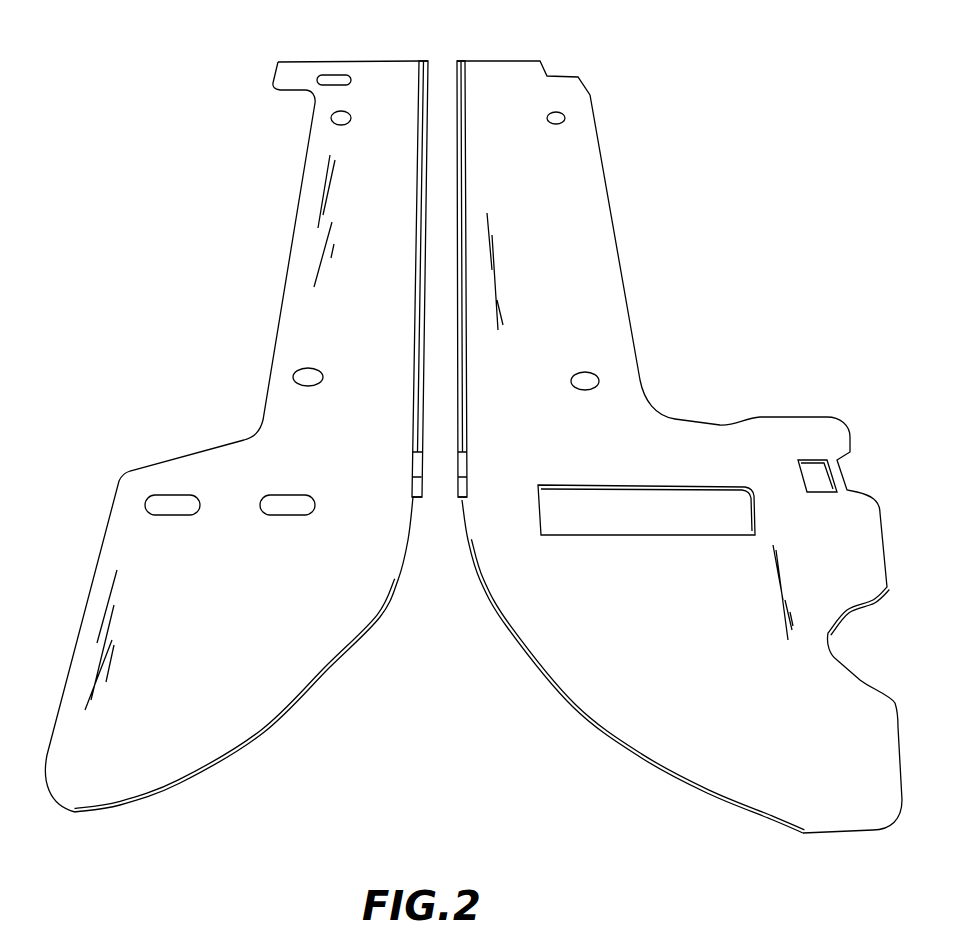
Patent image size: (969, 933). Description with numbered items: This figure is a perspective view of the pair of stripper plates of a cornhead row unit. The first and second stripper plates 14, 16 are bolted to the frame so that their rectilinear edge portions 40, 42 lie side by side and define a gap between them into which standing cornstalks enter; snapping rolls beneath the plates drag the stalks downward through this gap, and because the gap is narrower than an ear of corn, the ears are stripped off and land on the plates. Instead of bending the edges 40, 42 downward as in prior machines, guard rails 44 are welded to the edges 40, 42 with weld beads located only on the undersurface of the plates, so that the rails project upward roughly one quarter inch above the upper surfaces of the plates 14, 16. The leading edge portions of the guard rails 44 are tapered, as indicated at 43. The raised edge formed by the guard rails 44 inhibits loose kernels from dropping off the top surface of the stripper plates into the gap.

The first stripper plate 14 is at (238, 655).
The second stripper plate 16 is at (652, 656).
The rectilinear edge portion 40 is at (418, 192).
The rectilinear edge portion 42 is at (465, 210).
The tapered leading edge portion 43 is at (458, 498).
The guard rail 44 is at (464, 83).